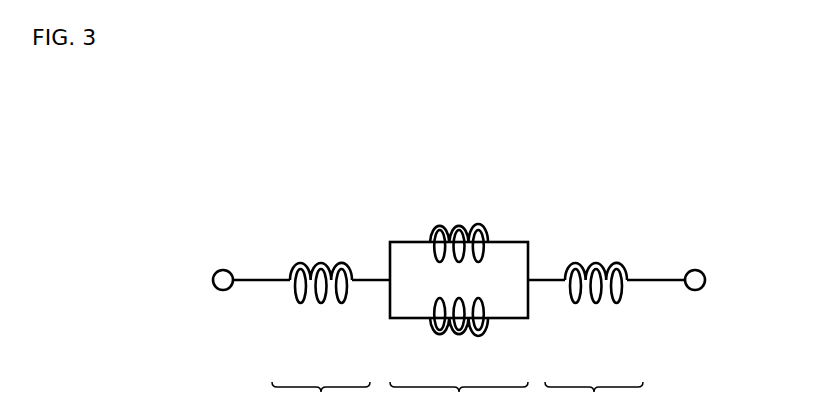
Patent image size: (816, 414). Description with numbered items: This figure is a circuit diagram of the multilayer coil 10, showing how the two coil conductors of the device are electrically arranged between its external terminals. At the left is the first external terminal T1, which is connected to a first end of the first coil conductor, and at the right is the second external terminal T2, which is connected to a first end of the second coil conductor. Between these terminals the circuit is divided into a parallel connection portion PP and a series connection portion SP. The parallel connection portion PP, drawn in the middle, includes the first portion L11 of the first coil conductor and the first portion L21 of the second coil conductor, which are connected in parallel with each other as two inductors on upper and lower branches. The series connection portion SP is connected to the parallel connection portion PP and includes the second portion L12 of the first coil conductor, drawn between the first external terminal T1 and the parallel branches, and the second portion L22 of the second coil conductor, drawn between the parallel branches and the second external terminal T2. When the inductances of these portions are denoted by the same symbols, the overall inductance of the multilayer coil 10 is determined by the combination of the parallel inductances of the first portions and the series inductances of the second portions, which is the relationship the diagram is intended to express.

The multilayer coil 10 is at (588, 160).
The first external terminal T1 is at (206, 280).
The second external terminal T2 is at (712, 280).
The first portion of the first coil conductor L11 is at (459, 228).
The first portion of the second coil conductor L21 is at (459, 334).
The second portion of the first coil conductor L12 is at (321, 266).
The second portion of the second coil conductor L22 is at (596, 266).
The series connection portion SP is at (457, 398).
The parallel connection portion PP is at (459, 398).